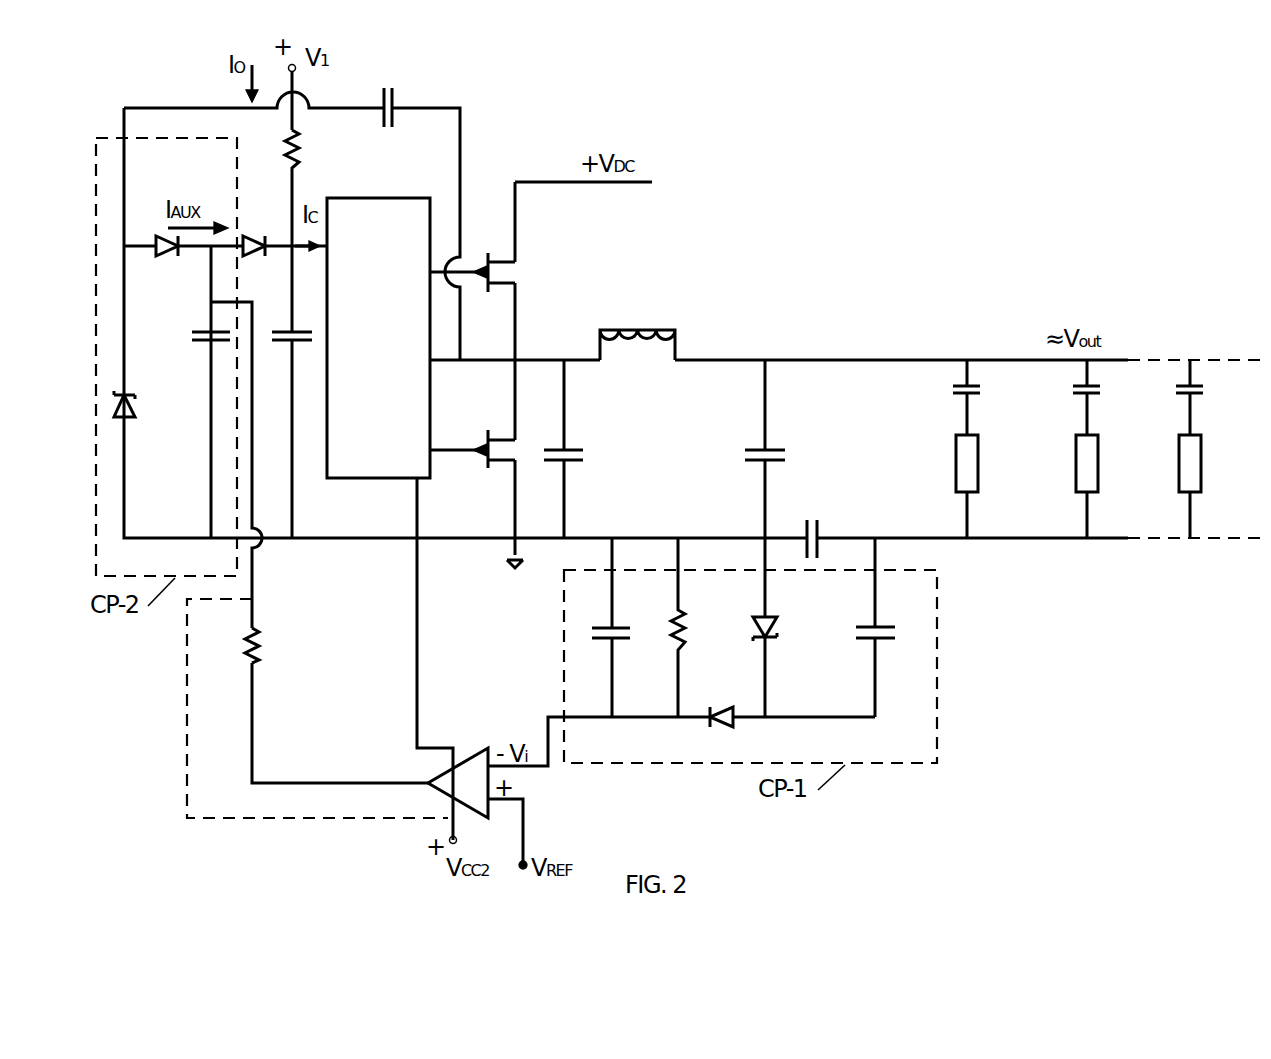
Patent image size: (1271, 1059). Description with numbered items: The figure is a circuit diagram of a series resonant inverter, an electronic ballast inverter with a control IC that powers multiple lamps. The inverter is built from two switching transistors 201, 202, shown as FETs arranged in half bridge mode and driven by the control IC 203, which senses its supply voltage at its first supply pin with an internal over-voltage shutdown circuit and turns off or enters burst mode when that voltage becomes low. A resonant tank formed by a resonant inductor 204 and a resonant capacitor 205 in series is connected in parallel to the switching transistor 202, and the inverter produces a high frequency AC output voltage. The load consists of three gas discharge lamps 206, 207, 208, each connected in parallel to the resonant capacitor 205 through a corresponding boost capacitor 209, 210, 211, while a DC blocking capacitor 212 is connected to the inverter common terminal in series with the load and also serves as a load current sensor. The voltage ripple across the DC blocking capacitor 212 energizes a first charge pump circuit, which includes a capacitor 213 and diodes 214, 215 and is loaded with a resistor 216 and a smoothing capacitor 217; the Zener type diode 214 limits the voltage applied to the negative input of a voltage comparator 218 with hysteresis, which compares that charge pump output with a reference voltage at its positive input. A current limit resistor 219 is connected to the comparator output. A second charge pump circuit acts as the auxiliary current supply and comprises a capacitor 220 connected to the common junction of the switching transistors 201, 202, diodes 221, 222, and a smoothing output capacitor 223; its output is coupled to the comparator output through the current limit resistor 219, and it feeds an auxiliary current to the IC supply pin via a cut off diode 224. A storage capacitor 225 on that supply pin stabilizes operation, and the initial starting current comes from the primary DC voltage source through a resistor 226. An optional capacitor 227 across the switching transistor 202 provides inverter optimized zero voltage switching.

The switching transistor 201 is at (518, 277).
The switching transistor 202 is at (512, 436).
The control IC 203 is at (378, 197).
The resonant inductor 204 is at (660, 326).
The resonant capacitor 205 is at (780, 451).
The gas discharge lamp 206 is at (955, 478).
The gas discharge lamp 207 is at (1075, 478).
The gas discharge lamp 208 is at (1178, 478).
The boost capacitor 209 is at (955, 394).
The boost capacitor 210 is at (1073, 394).
The boost capacitor 211 is at (1177, 394).
The DC blocking capacitor 212 is at (820, 532).
The capacitor 213 is at (873, 638).
The Zener type diode 214 is at (773, 628).
The diode 215 is at (720, 724).
The resistor 216 is at (687, 626).
The smoothing capacitor 217 is at (607, 638).
The voltage comparator 218 is at (468, 755).
The current limit resistor 219 is at (258, 650).
The capacitor 220 is at (396, 100).
The diode 221 is at (133, 412).
The diode 222 is at (163, 253).
The smoothing output capacitor 223 is at (203, 340).
The cut off diode 224 is at (253, 242).
The storage capacitor 225 is at (294, 343).
The resistor 226 is at (297, 141).
The capacitor 227 is at (570, 451).